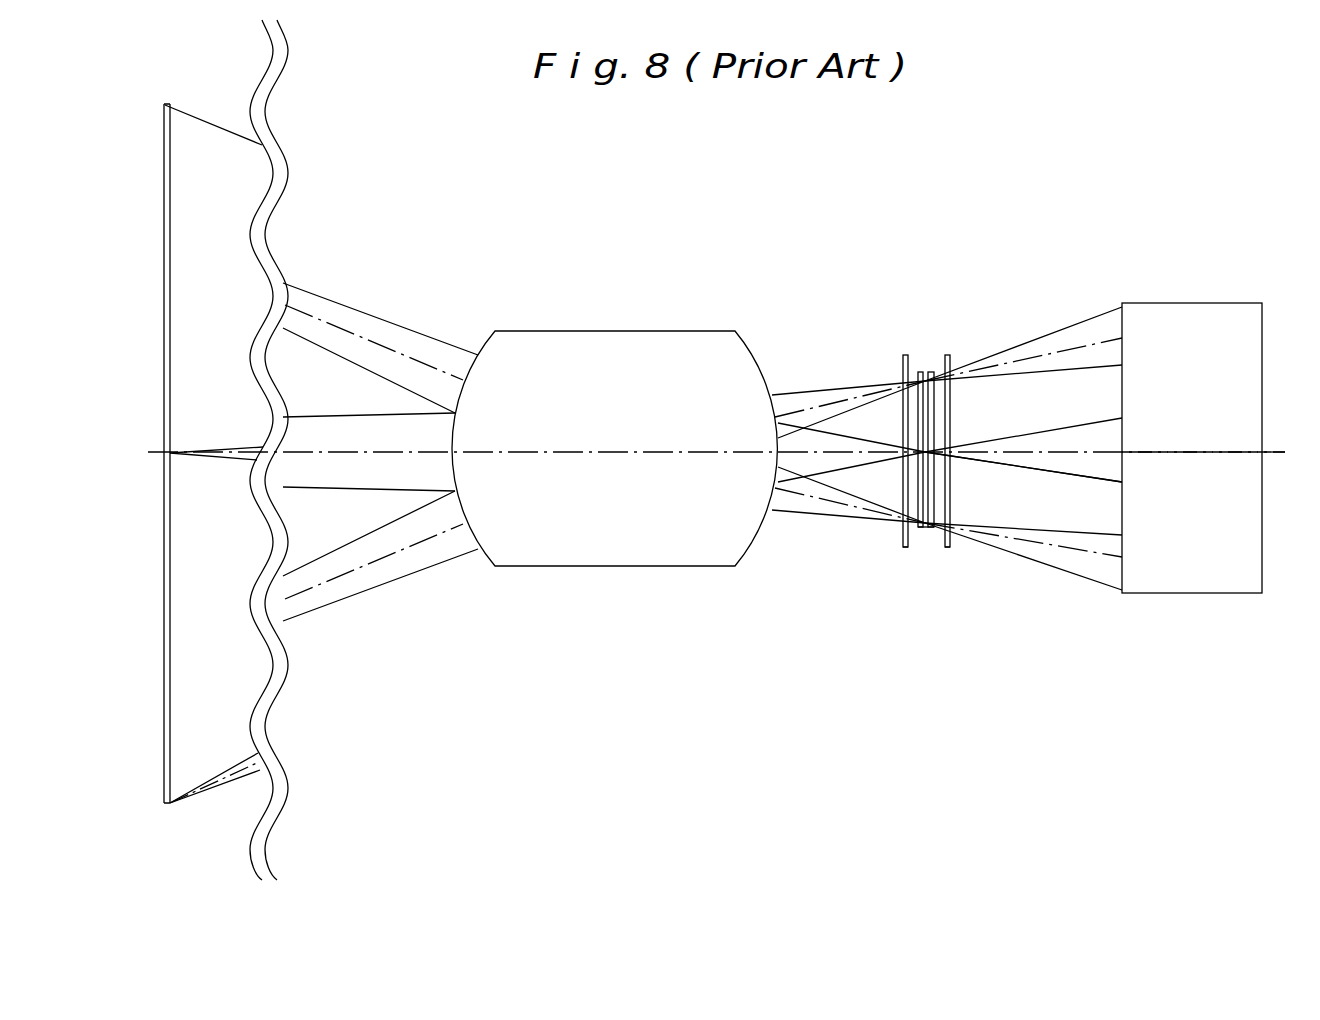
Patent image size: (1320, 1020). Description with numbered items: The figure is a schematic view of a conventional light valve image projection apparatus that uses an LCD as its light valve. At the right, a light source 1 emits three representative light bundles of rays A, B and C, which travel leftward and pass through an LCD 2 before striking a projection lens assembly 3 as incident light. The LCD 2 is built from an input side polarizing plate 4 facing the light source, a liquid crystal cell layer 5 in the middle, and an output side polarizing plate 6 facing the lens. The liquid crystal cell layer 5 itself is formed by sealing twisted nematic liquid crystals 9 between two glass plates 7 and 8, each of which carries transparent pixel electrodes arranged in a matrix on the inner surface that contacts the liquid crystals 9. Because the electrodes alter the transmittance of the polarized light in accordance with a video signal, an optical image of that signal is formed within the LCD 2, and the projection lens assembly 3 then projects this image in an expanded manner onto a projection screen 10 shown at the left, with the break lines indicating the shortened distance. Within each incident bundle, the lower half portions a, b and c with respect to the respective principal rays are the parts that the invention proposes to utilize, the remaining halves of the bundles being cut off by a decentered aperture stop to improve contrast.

The light source 1 is at (1200, 315).
The LCD 2 is at (850, 280).
The projection lens assembly 3 is at (668, 345).
The input side polarizing plate 4 is at (948, 356).
The liquid crystal cell layer 5 is at (921, 372).
The output side polarizing plate 6 is at (905, 356).
The glass plate 7 is at (948, 548).
The glass plate 8 is at (905, 548).
The twisted nematic liquid crystals 9 is at (925, 528).
The projection screen 10 is at (163, 322).
The light bundle of rays A is at (1023, 359).
The light bundle of rays B is at (1162, 452).
The light bundle of rays C is at (1023, 543).
The lower half portion of light bundle a is at (1077, 357).
The lower half portion of light bundle b is at (1075, 466).
The lower half portion of light bundle c is at (1077, 565).